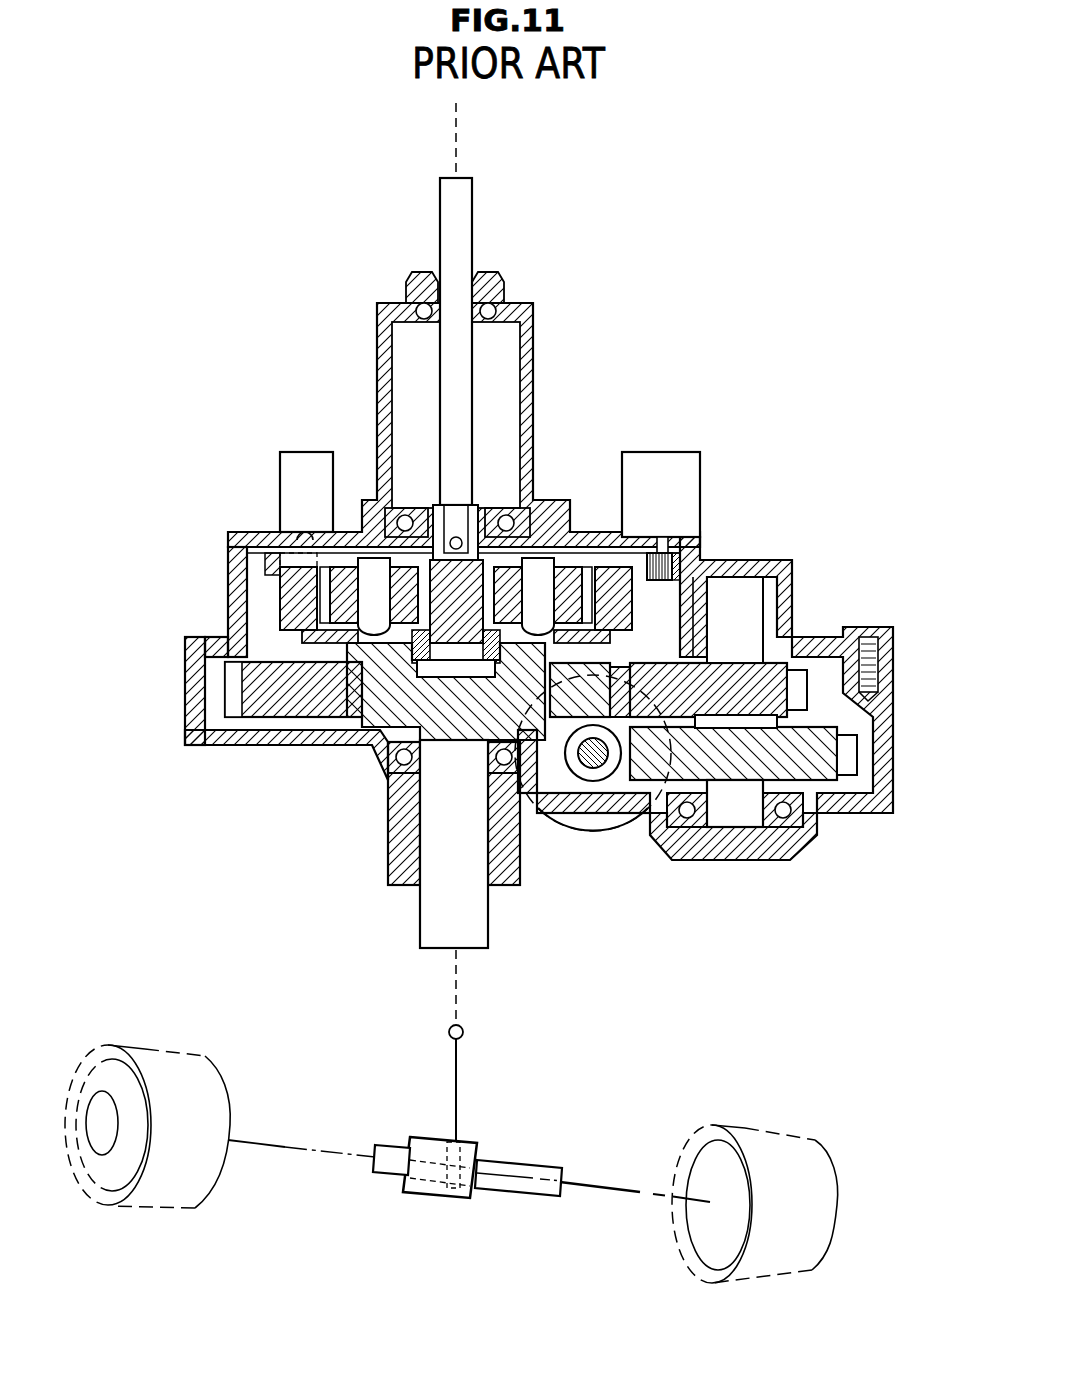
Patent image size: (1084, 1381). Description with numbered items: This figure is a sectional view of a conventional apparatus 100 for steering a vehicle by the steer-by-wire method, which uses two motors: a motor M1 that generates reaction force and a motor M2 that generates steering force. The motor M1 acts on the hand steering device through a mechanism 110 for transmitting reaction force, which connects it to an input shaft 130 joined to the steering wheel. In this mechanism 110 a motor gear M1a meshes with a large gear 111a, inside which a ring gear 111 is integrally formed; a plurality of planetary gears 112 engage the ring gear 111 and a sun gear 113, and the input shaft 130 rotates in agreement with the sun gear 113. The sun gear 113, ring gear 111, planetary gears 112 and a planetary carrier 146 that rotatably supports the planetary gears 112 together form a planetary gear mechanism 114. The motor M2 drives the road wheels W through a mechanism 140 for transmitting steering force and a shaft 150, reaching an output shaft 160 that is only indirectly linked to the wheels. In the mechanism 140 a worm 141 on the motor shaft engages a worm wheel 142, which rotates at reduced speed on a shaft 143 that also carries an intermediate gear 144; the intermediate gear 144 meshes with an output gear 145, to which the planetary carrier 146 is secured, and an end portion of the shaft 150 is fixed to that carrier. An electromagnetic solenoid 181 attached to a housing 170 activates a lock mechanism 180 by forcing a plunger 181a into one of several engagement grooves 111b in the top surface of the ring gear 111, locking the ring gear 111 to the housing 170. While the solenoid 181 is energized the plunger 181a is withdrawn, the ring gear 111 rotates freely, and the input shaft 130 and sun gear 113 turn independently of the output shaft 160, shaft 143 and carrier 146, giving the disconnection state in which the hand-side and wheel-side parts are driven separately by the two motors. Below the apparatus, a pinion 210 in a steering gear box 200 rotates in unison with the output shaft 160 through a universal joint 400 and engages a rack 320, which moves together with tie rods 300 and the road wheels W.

The apparatus for steering a vehicle 100 is at (859, 364).
The mechanism for transmitting reaction force 110 is at (770, 352).
The ring gear 111 is at (278, 597).
The large gear 111a is at (648, 602).
The engagement grooves 111b is at (268, 528).
The planetary gears 112 is at (573, 592).
The sun gear 113 is at (532, 598).
The planetary gear mechanism 114 is at (598, 594).
The input shaft 130 is at (440, 210).
The mechanism for transmitting steering force 140 is at (918, 945).
The worm 141 is at (586, 788).
The worm wheel 142 is at (863, 708).
The shaft 143 is at (735, 808).
The intermediate gear 144 is at (820, 778).
The output gear 145 is at (640, 824).
The planetary carrier 146 is at (528, 795).
The shaft 150 is at (465, 895).
The output shaft 160 is at (453, 1002).
The housing 170 is at (222, 622).
The lock mechanism 180 is at (315, 524).
The electromagnetic solenoid 181 is at (303, 460).
The plunger 181a is at (306, 538).
The steering gear box 200 is at (473, 1140).
The pinion 210 is at (447, 1137).
The tie rods 300 is at (280, 1150).
The rack 320 is at (428, 1184).
The universal joint 400 is at (463, 1032).
The motor M1 is at (690, 452).
The motor gear M1a is at (676, 570).
The motor M2 is at (615, 770).
The road wheels W is at (113, 1206).